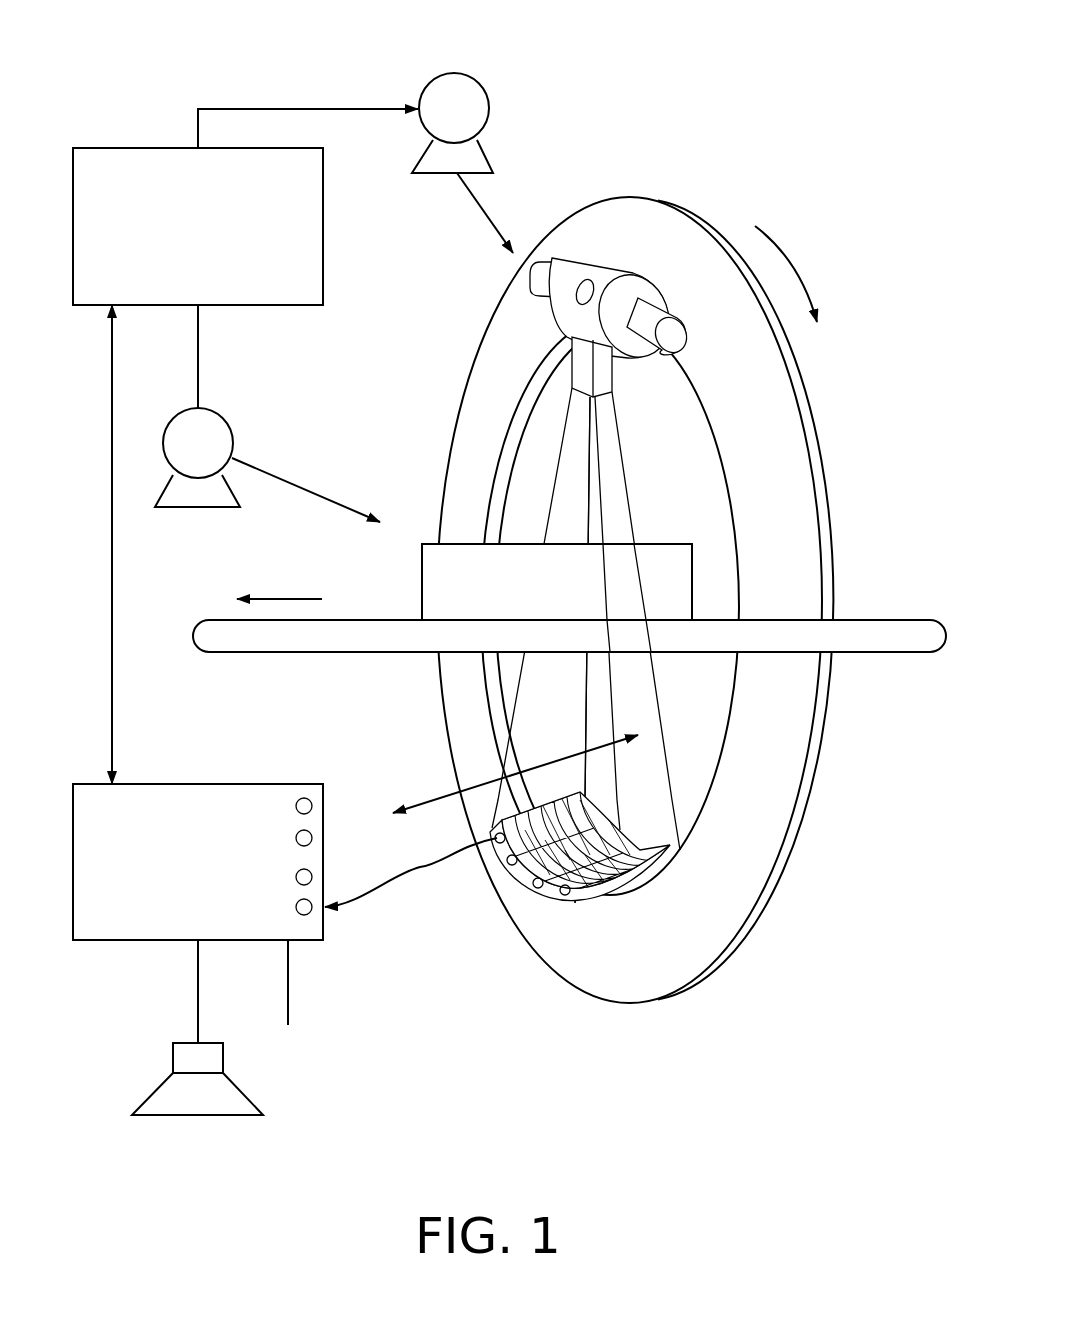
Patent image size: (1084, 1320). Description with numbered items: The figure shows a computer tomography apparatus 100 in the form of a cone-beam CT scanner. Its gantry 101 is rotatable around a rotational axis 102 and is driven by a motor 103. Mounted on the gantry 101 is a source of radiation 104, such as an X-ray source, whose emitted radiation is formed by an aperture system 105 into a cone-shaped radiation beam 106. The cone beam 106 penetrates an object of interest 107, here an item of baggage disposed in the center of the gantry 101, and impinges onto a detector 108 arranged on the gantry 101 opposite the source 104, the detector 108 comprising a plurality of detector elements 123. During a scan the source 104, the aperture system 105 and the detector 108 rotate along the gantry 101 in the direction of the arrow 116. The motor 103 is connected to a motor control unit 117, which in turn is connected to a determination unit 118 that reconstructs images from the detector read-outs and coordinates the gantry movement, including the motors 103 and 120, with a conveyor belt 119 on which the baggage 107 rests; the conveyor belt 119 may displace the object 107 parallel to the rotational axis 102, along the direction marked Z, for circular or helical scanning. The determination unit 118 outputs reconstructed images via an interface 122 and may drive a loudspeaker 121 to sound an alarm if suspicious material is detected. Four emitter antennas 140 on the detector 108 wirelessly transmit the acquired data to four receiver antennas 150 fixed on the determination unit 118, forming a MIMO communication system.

The computer tomography apparatus 100 is at (757, 78).
The gantry 101 is at (785, 805).
The rotational axis 102 is at (283, 599).
The motor 103 is at (489, 109).
The source of radiation 104 is at (615, 268).
The aperture system 105 is at (585, 367).
The cone-shaped radiation beam 106 is at (628, 495).
The object of interest 107 is at (422, 590).
The detector 108 is at (575, 903).
The arrow 116 is at (785, 270).
The motor control unit 117 is at (125, 148).
The determination unit 118 is at (185, 784).
The conveyor belt 119 is at (878, 635).
The motor 120 is at (232, 432).
The loudspeaker 121 is at (197, 1115).
The interface 122 is at (290, 988).
The detector elements 123 is at (592, 893).
The emitter antennas 140 is at (558, 897).
The receiver antennas 150 is at (296, 907).
The Z axis Z is at (428, 800).